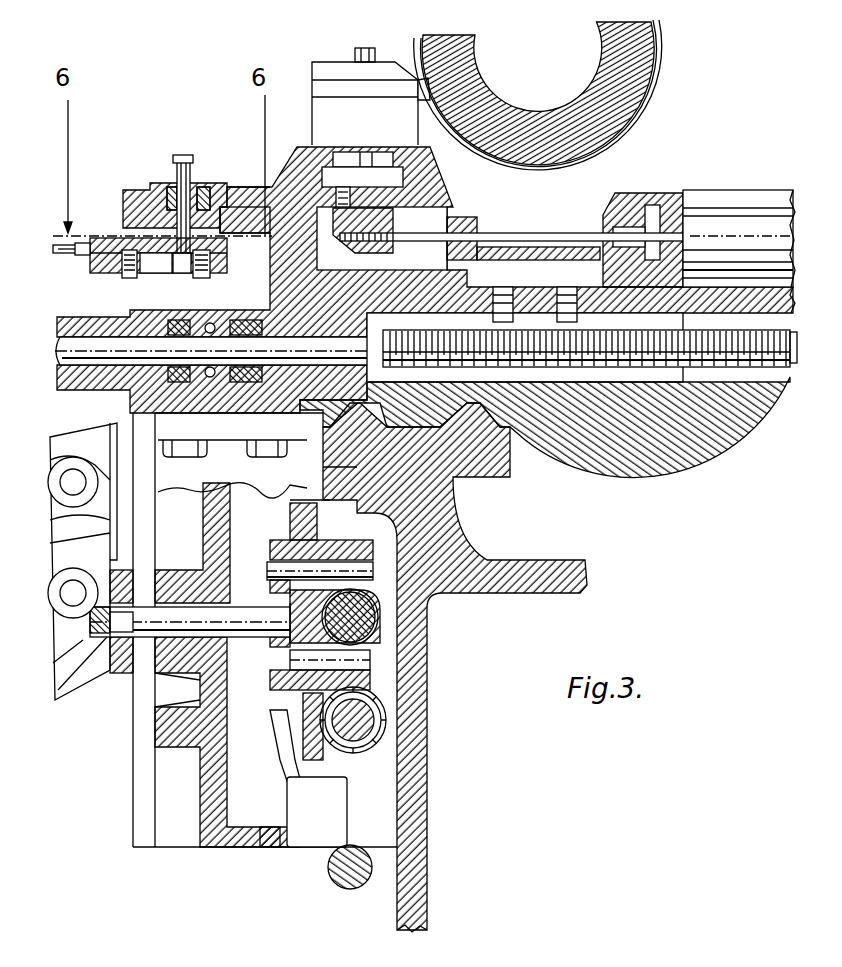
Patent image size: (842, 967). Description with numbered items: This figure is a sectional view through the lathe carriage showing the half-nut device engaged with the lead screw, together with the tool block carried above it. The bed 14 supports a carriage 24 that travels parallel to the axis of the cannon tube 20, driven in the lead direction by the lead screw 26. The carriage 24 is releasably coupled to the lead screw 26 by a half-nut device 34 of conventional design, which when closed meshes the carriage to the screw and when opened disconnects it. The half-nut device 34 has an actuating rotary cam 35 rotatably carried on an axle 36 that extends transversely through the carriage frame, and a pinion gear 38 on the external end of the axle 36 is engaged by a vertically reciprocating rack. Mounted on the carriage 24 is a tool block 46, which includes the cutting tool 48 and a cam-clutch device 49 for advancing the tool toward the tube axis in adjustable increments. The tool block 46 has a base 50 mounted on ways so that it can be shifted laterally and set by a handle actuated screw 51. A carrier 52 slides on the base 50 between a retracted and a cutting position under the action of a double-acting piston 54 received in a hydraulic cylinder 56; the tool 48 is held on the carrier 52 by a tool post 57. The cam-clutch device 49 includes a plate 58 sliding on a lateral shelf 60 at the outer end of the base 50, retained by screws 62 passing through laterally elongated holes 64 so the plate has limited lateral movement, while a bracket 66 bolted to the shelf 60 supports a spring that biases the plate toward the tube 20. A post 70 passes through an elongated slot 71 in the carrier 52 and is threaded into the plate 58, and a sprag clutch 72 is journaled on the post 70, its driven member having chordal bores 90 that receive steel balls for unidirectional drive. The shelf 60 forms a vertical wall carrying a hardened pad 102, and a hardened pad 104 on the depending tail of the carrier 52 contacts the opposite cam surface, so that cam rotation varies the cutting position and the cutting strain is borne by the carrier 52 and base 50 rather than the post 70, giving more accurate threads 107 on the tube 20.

The bed 14 is at (443, 490).
The cannon tube 20 is at (643, 50).
The carriage 24 is at (640, 460).
The lead screw 26 is at (473, 417).
The half-nut device 34 is at (390, 620).
The actuating rotary cam 35 is at (267, 580).
The axle 36 is at (197, 657).
The pinion gear 38 is at (113, 657).
The tool block 46 is at (226, 279).
The cutting tool 48 is at (427, 90).
The cam-clutch device 49 is at (171, 200).
The base 50 is at (463, 283).
The handle actuated screw 51 is at (613, 337).
The carrier 52 is at (303, 203).
The double-acting piston 54 is at (657, 207).
The cylinder 56 is at (753, 203).
The tool post 57 is at (365, 143).
The plate 58 is at (173, 260).
The lateral shelf 60 is at (113, 268).
The screws 62 is at (133, 278).
The elongated holes 64 is at (207, 253).
The bracket 66 is at (90, 253).
The post 70 is at (187, 180).
The slot 71 is at (207, 193).
The sprag clutch 72 is at (150, 220).
The bore 90 is at (213, 220).
The hardened pad 102 is at (270, 218).
The hardened pad 104 is at (150, 217).
The threads 107 is at (650, 103).